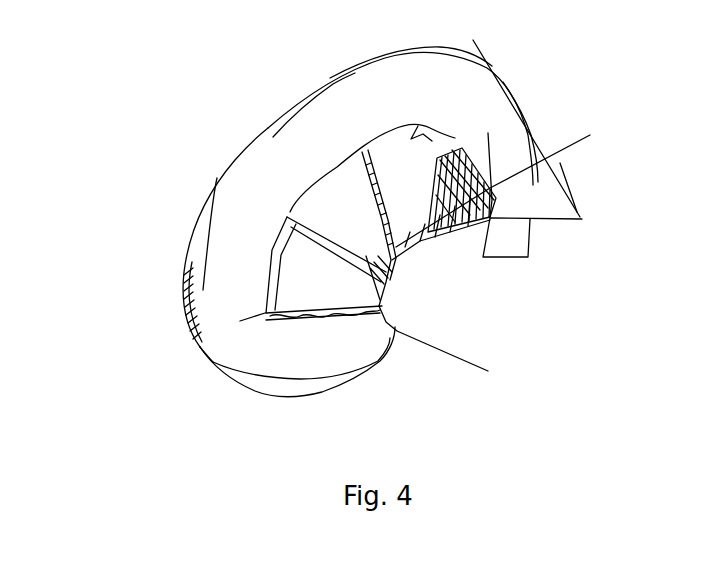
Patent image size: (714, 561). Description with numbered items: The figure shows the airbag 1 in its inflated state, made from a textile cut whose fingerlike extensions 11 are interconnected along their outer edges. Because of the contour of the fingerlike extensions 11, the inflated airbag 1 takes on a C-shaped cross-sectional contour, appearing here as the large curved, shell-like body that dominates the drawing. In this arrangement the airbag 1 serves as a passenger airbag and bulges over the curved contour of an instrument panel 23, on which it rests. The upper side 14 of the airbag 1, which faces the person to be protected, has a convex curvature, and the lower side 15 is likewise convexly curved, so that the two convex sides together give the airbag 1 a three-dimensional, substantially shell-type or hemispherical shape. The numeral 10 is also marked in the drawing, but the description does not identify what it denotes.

The airbag 1 is at (78, 347).
The housing shell 10 is at (226, 337).
The fingerlike extensions 11 is at (428, 221).
The upper side 14 is at (268, 122).
The lower side 15 is at (415, 137).
The instrument panel 23 is at (511, 303).